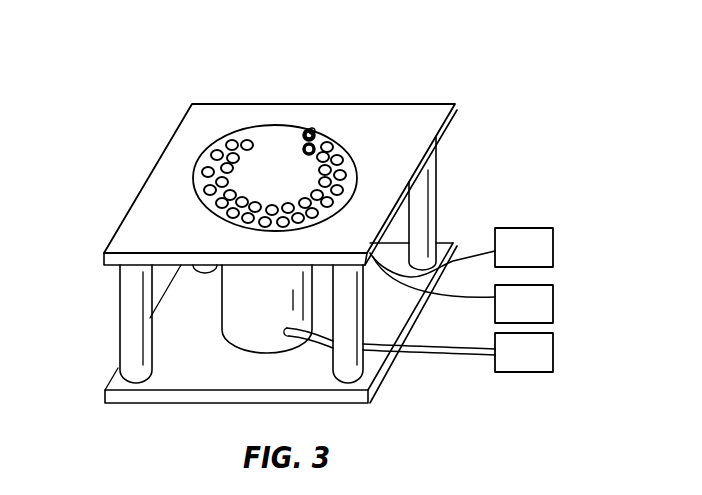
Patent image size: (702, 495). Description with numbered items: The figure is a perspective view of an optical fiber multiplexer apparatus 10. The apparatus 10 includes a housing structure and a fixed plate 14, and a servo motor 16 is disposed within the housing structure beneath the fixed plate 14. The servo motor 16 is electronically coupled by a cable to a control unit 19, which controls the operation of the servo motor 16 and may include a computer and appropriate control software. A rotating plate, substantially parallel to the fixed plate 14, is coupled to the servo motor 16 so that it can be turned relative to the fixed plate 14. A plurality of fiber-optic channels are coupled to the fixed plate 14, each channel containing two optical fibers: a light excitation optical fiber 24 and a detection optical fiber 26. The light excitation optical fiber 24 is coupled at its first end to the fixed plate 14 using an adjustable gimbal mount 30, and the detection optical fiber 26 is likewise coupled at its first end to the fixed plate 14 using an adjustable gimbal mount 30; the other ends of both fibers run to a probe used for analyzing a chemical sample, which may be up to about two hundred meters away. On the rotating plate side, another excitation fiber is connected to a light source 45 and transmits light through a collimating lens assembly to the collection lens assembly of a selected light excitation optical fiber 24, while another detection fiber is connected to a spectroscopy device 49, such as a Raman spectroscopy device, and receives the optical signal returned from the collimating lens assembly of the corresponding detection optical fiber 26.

The optical fiber multiplexer apparatus 10 is at (156, 84).
The fixed plate 14 is at (223, 117).
The servo motor 16 is at (278, 306).
The control unit 19 is at (536, 365).
The light excitation optical fiber 24 is at (315, 131).
The detection optical fiber 26 is at (317, 128).
The adjustable gimbal mount 30 is at (305, 150).
The light source 45 is at (536, 259).
The spectroscopy device 49 is at (536, 316).